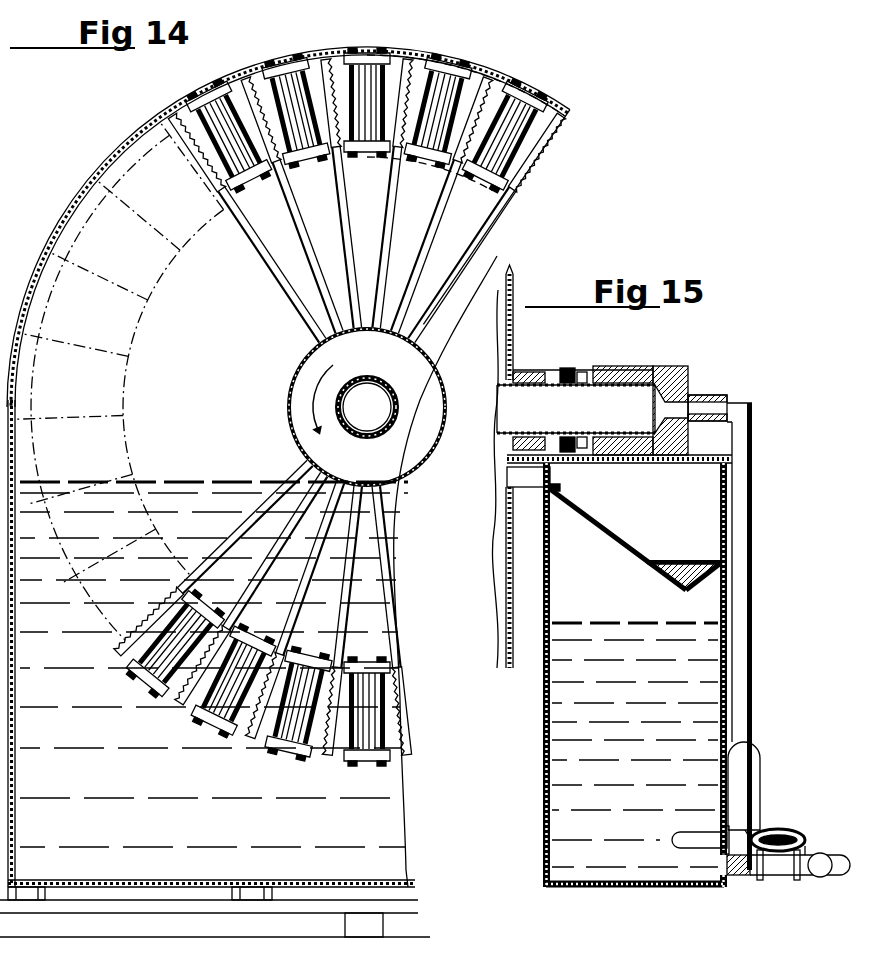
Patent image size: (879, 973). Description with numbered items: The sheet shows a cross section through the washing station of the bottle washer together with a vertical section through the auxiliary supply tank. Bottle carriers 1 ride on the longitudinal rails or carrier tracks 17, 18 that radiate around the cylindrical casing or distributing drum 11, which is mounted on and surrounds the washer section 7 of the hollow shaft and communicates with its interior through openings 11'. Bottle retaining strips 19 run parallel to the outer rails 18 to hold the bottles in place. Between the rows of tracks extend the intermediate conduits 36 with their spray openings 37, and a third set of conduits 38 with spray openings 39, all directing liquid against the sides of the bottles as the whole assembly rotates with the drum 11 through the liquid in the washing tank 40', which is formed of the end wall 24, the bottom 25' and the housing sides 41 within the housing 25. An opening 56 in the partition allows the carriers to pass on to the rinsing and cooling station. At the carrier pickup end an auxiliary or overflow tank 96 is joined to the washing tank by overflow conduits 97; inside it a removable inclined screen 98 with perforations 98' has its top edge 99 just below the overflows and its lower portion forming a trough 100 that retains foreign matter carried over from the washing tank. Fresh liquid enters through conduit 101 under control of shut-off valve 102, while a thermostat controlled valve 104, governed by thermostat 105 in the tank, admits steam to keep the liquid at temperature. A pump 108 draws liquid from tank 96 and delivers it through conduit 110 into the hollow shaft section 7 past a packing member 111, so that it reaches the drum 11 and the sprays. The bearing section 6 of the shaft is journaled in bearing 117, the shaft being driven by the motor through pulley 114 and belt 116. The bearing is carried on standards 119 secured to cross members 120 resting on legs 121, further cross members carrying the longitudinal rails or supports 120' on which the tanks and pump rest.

In FIG. 14, the bottle carriers 1 is at (375, 152).
In FIG. 15, the bearing section 6 is at (587, 380).
In FIG. 14, the washer section 7 is at (384, 378).
In FIG. 14, the cylindrical casing or distributing drum 11 is at (367, 407).
In FIG. 14, the openings 11' is at (380, 419).
In FIG. 14, the longitudinal rails or carrier tracks 17 is at (254, 186).
In FIG. 14, the longitudinal rails or carrier tracks 18 is at (256, 68).
In FIG. 14, the bottle retaining strips 19 is at (527, 94).
In FIG. 15, the end wall 24 is at (506, 322).
In FIG. 14, the housing 25 is at (288, 227).
In FIG. 14, the bottom 25' is at (211, 870).
In FIG. 14, the intermediate conduits 36 is at (237, 218).
In FIG. 14, the spray openings 37 is at (198, 146).
In FIG. 14, the third set of conduits 38 is at (393, 214).
In FIG. 14, the spray openings 39 is at (536, 161).
In FIG. 14, the tank 40' is at (214, 664).
In FIG. 14, the housing sides 41 is at (16, 786).
In FIG. 14, the opening 56 is at (491, 73).
In FIG. 15, the auxiliary or overflow tank 96 is at (542, 776).
In FIG. 15, the overflow conduits 97 is at (533, 491).
In FIG. 15, the removable inclined screen or perforated member 98 is at (618, 539).
In FIG. 15, the perforations 98' is at (671, 546).
In FIG. 15, the top edge 99 is at (560, 486).
In FIG. 15, the trough 100 is at (671, 583).
In FIG. 15, the conduit 101 is at (843, 876).
In FIG. 15, the shut-off valve 102 is at (817, 880).
In FIG. 15, the thermostat controlled valve 104 is at (770, 882).
In FIG. 15, the thermostat 105 is at (675, 840).
In FIG. 15, the pump 108 is at (758, 744).
In FIG. 15, the conduit 110 is at (752, 404).
In FIG. 15, the packing member 111 is at (650, 366).
In FIG. 15, the pulley 114 is at (580, 371).
In FIG. 15, the belt 116 is at (562, 367).
In FIG. 15, the bearing 117 is at (552, 370).
In FIG. 15, the standards 119 is at (512, 612).
In FIG. 14, the cross members 120 is at (209, 910).
In FIG. 14, the longitudinal rails or supports 120' is at (46, 910).
In FIG. 14, the legs or supports 121 is at (365, 929).